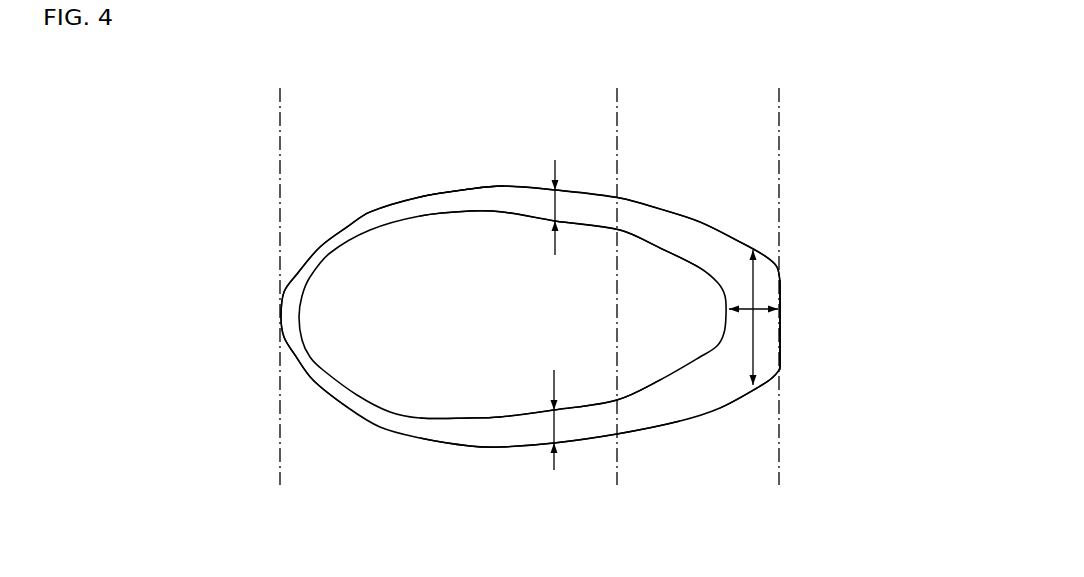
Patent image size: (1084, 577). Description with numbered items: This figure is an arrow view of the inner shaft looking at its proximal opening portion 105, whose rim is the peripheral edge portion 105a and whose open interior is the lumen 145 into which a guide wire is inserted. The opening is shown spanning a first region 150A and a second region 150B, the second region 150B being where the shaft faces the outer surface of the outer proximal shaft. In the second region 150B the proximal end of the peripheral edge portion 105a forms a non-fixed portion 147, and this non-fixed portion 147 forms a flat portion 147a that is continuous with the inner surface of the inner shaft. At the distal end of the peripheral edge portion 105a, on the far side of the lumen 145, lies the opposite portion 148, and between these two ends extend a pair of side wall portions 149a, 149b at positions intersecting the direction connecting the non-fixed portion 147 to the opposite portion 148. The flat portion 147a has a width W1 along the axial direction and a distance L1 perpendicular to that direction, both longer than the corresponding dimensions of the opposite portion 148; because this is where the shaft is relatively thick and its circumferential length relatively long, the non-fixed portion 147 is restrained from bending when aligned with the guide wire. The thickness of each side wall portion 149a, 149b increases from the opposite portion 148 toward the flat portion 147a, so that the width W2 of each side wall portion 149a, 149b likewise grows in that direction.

The lumen 145 is at (530, 358).
The proximal opening portion 105 is at (417, 380).
The peripheral edge portion 105a is at (419, 210).
The side wall portion 149a is at (583, 213).
The side wall portion 149b is at (585, 418).
The non-fixed portion 147 is at (757, 233).
The flat portion 147a is at (778, 275).
The opposite portion 148 is at (280, 318).
The first region 150A is at (616, 98).
The second region 150B is at (778, 98).
The width of the flat portion W1 is at (758, 312).
The width of the side wall portion W2 is at (553, 203).
The distance of the flat portion L1 is at (752, 282).